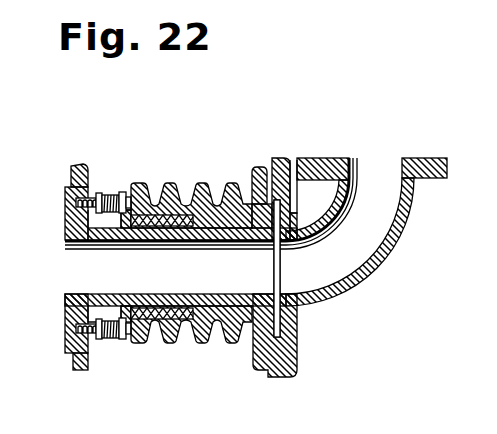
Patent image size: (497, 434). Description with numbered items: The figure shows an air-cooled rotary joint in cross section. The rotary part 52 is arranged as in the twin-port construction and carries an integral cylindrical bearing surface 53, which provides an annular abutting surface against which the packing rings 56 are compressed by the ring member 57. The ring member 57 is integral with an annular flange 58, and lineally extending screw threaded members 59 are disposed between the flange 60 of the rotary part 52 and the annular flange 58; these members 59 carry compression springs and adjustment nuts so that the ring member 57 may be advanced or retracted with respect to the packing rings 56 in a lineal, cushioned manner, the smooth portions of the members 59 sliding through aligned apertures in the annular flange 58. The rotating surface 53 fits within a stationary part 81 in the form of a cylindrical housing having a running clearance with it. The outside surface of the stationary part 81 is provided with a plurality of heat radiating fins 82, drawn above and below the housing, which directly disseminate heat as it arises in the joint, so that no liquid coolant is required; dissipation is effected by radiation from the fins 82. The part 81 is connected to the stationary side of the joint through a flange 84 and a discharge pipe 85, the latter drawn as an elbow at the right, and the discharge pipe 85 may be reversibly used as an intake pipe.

The rotary part 52 is at (90, 293).
The bearing surface 53 is at (212, 239).
The packing rings 56 is at (162, 239).
The ring member 57 is at (105, 243).
The annular flange 58 is at (125, 192).
The screw threaded members 59 is at (94, 196).
The flange 60 is at (65, 200).
The stationary part 81 is at (202, 183).
The heat radiating fins 82 is at (141, 345).
The flange 84 is at (273, 378).
The discharge pipe 85 is at (373, 172).